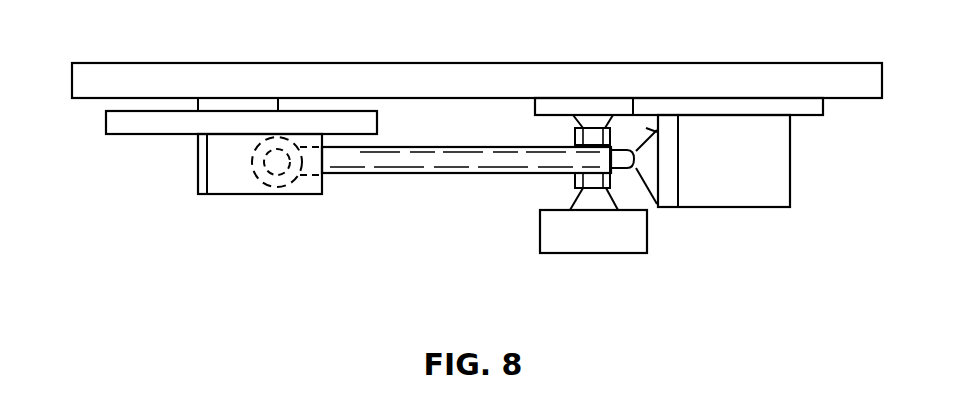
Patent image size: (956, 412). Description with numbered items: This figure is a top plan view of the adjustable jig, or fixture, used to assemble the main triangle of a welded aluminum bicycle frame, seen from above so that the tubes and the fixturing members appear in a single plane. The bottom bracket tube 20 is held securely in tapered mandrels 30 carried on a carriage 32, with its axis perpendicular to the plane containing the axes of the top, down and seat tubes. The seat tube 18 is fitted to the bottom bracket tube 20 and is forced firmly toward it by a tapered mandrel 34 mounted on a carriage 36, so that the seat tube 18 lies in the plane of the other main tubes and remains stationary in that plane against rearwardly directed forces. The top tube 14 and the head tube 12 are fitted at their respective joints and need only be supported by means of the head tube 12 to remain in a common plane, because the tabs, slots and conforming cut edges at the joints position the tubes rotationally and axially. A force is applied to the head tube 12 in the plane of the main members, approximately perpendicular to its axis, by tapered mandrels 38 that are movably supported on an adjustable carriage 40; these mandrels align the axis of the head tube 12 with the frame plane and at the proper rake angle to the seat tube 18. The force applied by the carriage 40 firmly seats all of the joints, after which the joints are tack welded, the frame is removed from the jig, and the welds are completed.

The head tube 12 is at (270, 164).
The top tube 14 is at (450, 176).
The seat tube 18 is at (623, 148).
The bottom bracket tube 20 is at (608, 177).
The tapered mandrels 30 is at (574, 120).
The carriage 32 is at (592, 253).
The tapered mandrel 34 is at (646, 128).
The carriage 36 is at (790, 160).
The tapered mandrels 38 is at (290, 194).
The adjustable carriage 40 is at (142, 135).